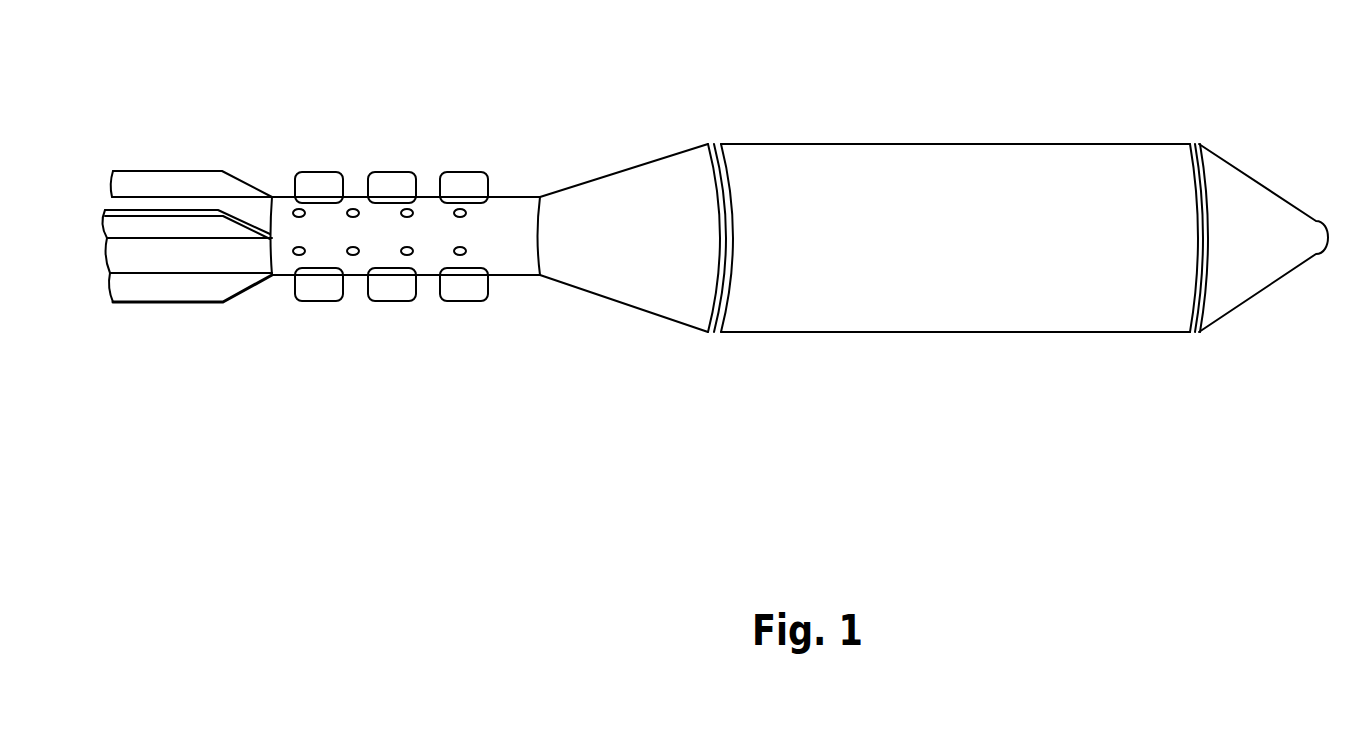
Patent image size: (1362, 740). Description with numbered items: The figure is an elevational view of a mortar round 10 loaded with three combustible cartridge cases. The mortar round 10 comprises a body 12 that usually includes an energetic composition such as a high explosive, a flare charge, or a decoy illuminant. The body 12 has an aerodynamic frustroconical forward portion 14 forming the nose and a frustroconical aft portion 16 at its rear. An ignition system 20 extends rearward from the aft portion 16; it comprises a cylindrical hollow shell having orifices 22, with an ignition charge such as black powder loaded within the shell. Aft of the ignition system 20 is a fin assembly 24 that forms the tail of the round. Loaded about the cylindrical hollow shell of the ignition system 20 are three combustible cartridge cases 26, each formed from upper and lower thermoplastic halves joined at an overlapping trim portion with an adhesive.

The mortar round 10 is at (1000, 108).
The body 12 is at (1090, 300).
The aerodynamic frustroconical forward portion 14 is at (1255, 213).
The frustroconical aft portion 16 is at (667, 180).
The ignition system 20 is at (287, 263).
The orifices 22 is at (467, 215).
The fin assembly 24 is at (133, 182).
The combustible cartridge cases 26 is at (325, 180).